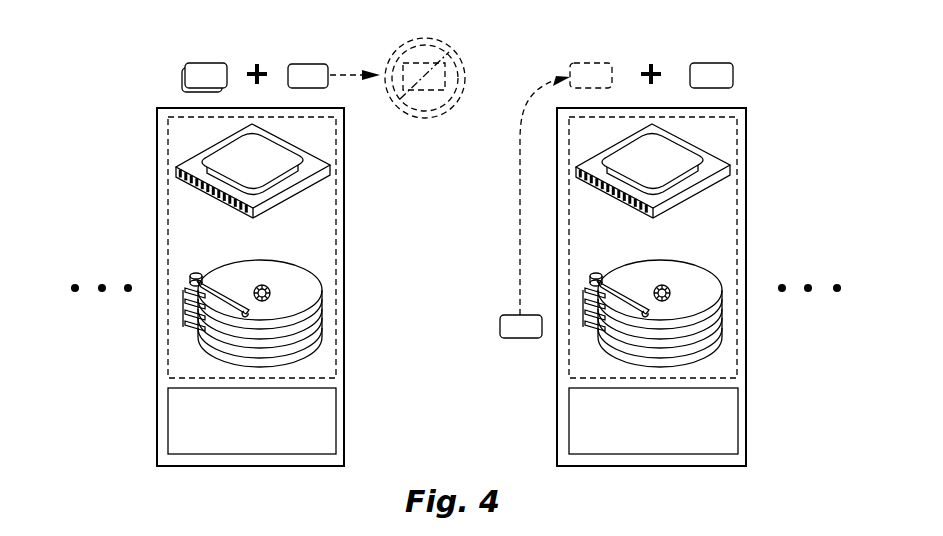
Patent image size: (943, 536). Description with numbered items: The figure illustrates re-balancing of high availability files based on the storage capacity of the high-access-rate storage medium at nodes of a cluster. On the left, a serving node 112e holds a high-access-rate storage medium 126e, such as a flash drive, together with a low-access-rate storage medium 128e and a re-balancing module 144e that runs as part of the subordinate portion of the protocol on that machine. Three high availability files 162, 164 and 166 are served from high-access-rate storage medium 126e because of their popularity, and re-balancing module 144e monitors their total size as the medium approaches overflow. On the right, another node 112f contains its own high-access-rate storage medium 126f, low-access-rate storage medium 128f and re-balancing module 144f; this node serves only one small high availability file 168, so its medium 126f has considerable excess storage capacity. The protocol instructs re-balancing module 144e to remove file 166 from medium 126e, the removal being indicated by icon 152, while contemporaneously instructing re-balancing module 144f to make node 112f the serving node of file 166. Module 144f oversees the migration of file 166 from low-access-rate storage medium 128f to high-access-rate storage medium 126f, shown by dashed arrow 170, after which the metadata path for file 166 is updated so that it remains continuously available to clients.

The serving node 112e is at (157, 186).
The node 112f is at (746, 350).
The high-access-rate storage medium 126e is at (344, 168).
The high-access-rate storage medium 126f is at (746, 168).
The low-access-rate storage medium 128e is at (327, 287).
The low-access-rate storage medium 128f is at (730, 313).
The re-balancing module 144e is at (168, 413).
The re-balancing module 144f is at (569, 413).
The high availability file 162 is at (207, 62).
The high availability file 164 is at (184, 74).
The high availability file 166 is at (310, 63).
The high availability file 168 is at (713, 62).
The dashed arrow 170 is at (520, 130).
The icon 152 is at (457, 66).